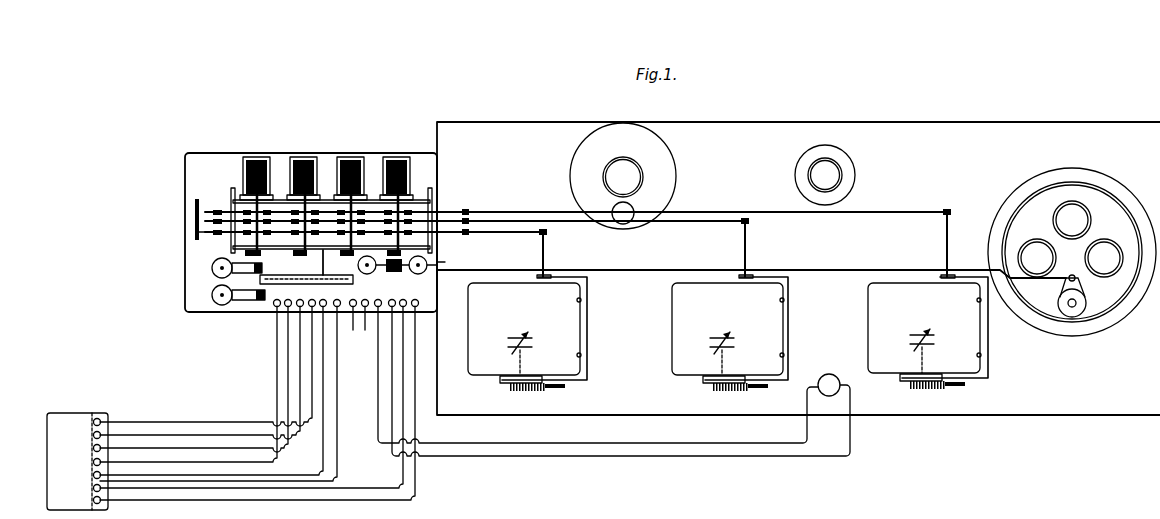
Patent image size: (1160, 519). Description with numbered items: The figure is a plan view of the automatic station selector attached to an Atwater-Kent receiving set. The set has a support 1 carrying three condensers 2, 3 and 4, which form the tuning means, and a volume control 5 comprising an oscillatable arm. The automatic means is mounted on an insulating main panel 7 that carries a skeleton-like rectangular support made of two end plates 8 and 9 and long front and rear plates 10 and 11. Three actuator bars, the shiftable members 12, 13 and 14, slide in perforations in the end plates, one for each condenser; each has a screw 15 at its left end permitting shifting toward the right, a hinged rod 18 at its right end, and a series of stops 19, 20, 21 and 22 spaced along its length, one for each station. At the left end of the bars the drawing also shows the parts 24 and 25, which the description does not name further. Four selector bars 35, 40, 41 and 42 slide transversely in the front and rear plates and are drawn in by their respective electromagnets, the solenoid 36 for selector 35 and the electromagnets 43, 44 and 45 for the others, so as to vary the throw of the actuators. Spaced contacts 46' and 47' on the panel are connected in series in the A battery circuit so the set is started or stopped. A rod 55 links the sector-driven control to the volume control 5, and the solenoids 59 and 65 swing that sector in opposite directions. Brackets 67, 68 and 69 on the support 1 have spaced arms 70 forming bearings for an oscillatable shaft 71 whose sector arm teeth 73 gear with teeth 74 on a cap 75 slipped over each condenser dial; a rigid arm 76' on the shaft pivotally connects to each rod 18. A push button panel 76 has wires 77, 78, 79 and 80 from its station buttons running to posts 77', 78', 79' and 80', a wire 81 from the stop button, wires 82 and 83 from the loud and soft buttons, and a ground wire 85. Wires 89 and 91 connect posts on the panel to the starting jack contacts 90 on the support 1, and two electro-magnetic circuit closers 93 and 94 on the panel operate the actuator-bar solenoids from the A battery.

The support 1 is at (798, 268).
The condenser 2 is at (520, 348).
The condenser 3 is at (722, 348).
The condenser 4 is at (922, 346).
The volume control 5 is at (1067, 318).
The main panel 7 is at (193, 157).
The end plate 8 is at (232, 198).
The end plate 9 is at (433, 200).
The front plate 10 is at (232, 250).
The rear plate 11 is at (253, 194).
The shiftable member 12 is at (460, 235).
The shiftable member 13 is at (466, 219).
The shiftable member 14 is at (463, 210).
The screw 15 is at (215, 211).
The hinged rod 18 is at (508, 230).
The stop 19 is at (288, 209).
The stop 20 is at (334, 209).
The stop 21 is at (382, 209).
The stop 22 is at (426, 200).
The stop bar 24 is at (195, 218).
The stop bar connection 25 is at (195, 232).
The selector bar 35 is at (270, 258).
The solenoid 36 is at (258, 160).
The selector bar 40 is at (300, 256).
The selector bar 41 is at (349, 255).
The selector bar 42 is at (438, 262).
The electromagnet 43 is at (305, 160).
The electromagnet 44 is at (351, 160).
The electromagnet 45 is at (398, 160).
The contact 46' is at (306, 287).
The contact 47' is at (343, 275).
The rod 55 is at (650, 270).
The solenoid 59 is at (372, 273).
The solenoid 65 is at (420, 274).
The bracket 67 is at (588, 336).
The bracket 68 is at (789, 330).
The bracket 69 is at (989, 351).
The spaced arms 70 is at (583, 277).
The oscillatable shaft 71 is at (545, 254).
The teeth 73 is at (557, 388).
The teeth 74 is at (526, 391).
The cap 75 is at (503, 383).
The push button panel 76 is at (69, 449).
The rigid arm 76' is at (509, 356).
The wire connection 77 is at (206, 367).
The post 77' is at (280, 331).
The wire connection 78 is at (200, 373).
The post 78' is at (273, 326).
The wire connection 79 is at (194, 380).
The post 79' is at (260, 319).
The wire 80 is at (188, 385).
The post 80' is at (238, 319).
The wire connection 81 is at (176, 476).
The wire connection 82 is at (215, 488).
The wire connection 83 is at (261, 500).
The ground wire 85 is at (145, 517).
The wire 89 is at (712, 457).
The starting jack contacts 90 is at (833, 375).
The wire 91 is at (585, 445).
The electro-magnetic circuit closer 93 is at (212, 294).
The electro-magnetic circuit closer 94 is at (212, 270).
The A battery A is at (363, 331).